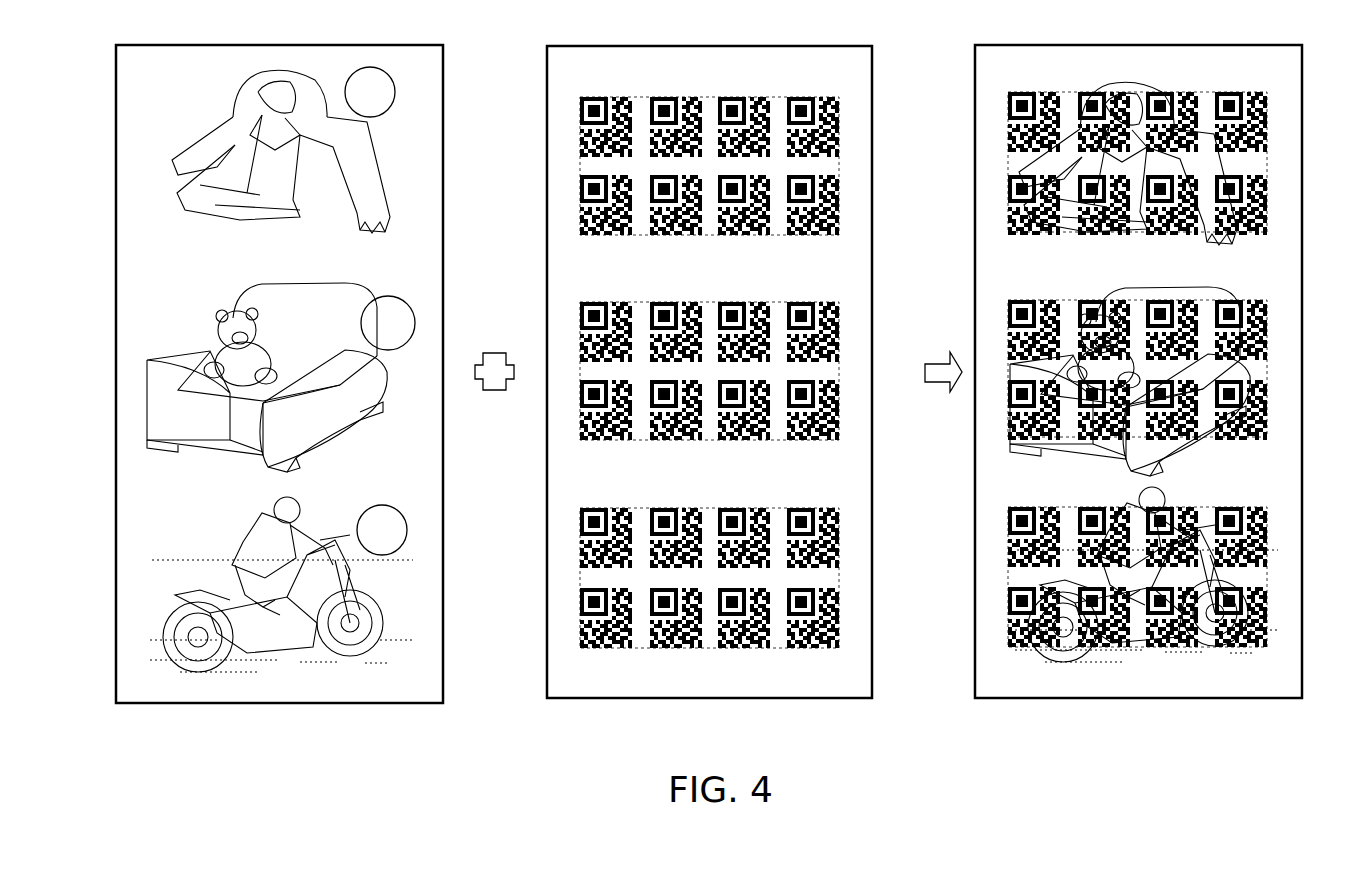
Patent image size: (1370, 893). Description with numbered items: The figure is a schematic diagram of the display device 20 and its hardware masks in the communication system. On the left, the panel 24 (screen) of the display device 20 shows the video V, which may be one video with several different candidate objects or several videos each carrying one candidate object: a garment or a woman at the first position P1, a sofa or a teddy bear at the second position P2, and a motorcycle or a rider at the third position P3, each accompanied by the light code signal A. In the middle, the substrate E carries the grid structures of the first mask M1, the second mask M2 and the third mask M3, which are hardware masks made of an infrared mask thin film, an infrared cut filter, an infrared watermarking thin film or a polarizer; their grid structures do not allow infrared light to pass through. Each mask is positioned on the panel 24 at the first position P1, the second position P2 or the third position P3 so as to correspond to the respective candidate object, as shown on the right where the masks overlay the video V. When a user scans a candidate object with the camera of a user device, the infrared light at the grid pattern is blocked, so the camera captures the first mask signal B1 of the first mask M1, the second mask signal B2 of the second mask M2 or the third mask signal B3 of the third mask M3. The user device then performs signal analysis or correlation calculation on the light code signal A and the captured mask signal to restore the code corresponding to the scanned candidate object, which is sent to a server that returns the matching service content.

The display device 20 is at (283, 45).
The panel 24 is at (1147, 45).
The first position P1 is at (180, 133).
The second position P2 is at (185, 337).
The third position P3 is at (180, 548).
The light code signal A is at (380, 311).
The video V is at (378, 207).
The substrate E is at (858, 86).
The first mask M1 is at (836, 149).
The first mask signal B1 is at (836, 212).
The second mask M2 is at (836, 350).
The second mask signal B2 is at (836, 420).
The third mask M3 is at (836, 558).
The third mask signal B3 is at (836, 622).